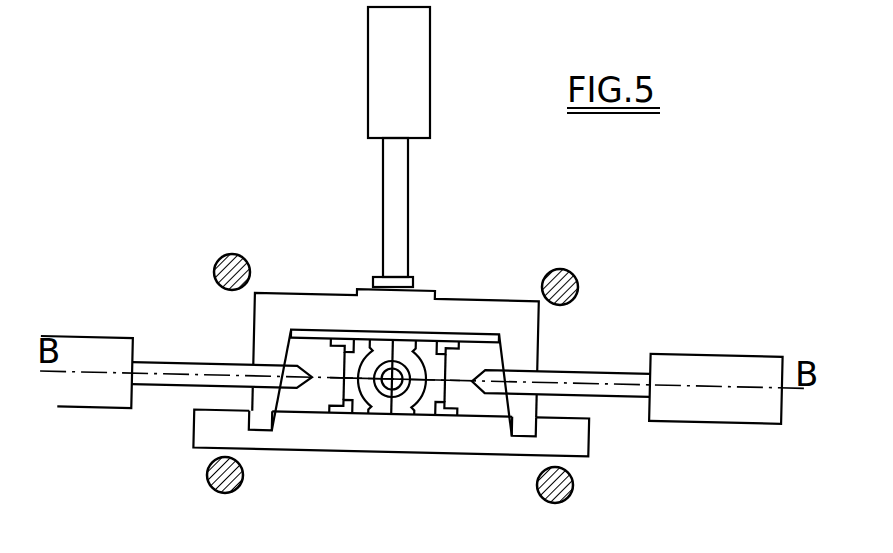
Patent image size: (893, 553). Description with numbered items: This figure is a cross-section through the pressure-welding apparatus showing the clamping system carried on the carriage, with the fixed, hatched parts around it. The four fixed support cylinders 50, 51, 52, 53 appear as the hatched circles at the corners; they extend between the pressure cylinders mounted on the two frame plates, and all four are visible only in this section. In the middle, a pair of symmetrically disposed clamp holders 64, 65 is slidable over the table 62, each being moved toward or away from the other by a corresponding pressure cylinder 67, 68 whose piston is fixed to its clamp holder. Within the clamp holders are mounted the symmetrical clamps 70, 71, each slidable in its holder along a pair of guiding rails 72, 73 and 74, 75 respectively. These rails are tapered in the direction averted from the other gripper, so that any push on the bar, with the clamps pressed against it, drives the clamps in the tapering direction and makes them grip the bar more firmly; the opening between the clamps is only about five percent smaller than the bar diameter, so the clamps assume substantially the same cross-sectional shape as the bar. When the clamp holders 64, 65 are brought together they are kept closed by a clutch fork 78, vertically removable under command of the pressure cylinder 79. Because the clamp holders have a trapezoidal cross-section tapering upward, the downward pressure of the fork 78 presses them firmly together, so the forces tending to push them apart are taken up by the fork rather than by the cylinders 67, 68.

The support cylinder 50 is at (220, 258).
The support cylinder 51 is at (212, 490).
The support cylinder 52 is at (582, 274).
The support cylinder 53 is at (568, 499).
The table 62 is at (437, 420).
The clamp holder 64 is at (302, 398).
The clamp holder 65 is at (490, 405).
The pressure cylinder 67 is at (108, 398).
The pressure cylinder 68 is at (716, 415).
The clamp 70 is at (377, 350).
The clamp 71 is at (405, 350).
The guiding rail 72 is at (342, 414).
The guiding rail 73 is at (340, 343).
The guiding rail 74 is at (430, 415).
The guiding rail 75 is at (437, 345).
The clutch fork 78 is at (514, 314).
The pressure cylinder 79 is at (388, 62).